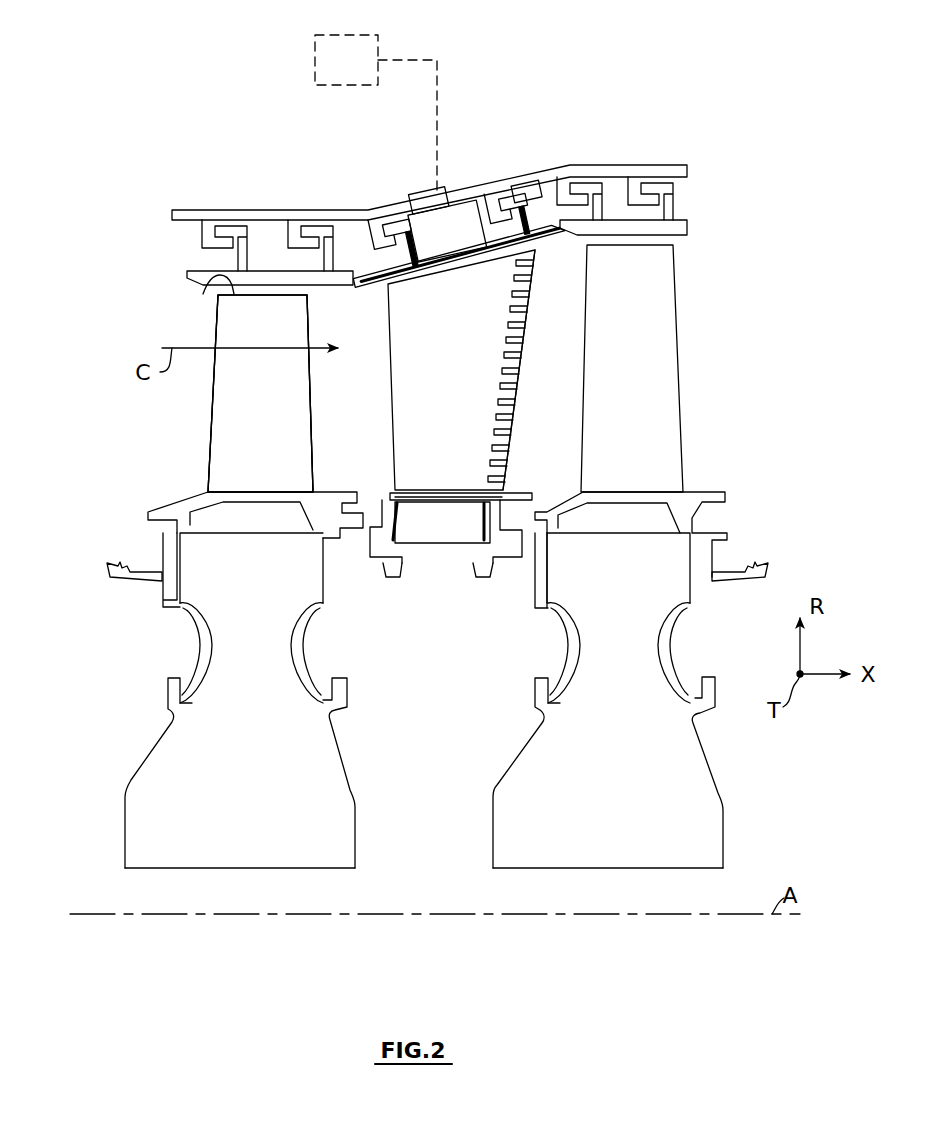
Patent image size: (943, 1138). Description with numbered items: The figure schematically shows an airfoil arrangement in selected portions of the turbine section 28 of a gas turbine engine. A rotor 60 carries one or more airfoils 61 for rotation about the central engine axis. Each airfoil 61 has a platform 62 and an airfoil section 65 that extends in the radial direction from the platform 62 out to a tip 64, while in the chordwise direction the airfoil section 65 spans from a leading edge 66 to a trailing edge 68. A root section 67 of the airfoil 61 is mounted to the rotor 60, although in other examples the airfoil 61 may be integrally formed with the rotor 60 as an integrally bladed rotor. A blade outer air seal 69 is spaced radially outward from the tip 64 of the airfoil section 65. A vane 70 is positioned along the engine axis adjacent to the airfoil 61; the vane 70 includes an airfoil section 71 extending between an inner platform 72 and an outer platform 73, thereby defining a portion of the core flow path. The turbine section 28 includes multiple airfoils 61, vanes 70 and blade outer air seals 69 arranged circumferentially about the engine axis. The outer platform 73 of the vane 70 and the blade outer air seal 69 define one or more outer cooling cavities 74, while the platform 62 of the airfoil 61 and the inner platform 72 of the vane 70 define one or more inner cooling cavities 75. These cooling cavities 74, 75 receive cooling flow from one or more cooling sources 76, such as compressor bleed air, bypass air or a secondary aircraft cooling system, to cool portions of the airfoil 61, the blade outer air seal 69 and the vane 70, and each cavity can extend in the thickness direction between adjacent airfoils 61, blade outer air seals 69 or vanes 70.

The turbine section 28 is at (100, 156).
The rotor 60 is at (140, 763).
The airfoil 61 is at (322, 398).
The platform 62 is at (163, 508).
The tip 64 is at (217, 284).
The airfoil section 65 is at (240, 400).
The leading edge 66 is at (210, 438).
The root section 67 is at (195, 578).
The trailing edge 68 is at (313, 442).
The blade outer air seal 69 is at (186, 275).
The vane 70 is at (523, 361).
The airfoil section 71 is at (473, 441).
The inner platform 72 is at (522, 490).
The outer platform 73 is at (545, 248).
The outer cooling cavity 74 is at (429, 220).
The inner cooling cavity 75 is at (420, 674).
The cooling source 76 is at (335, 73).